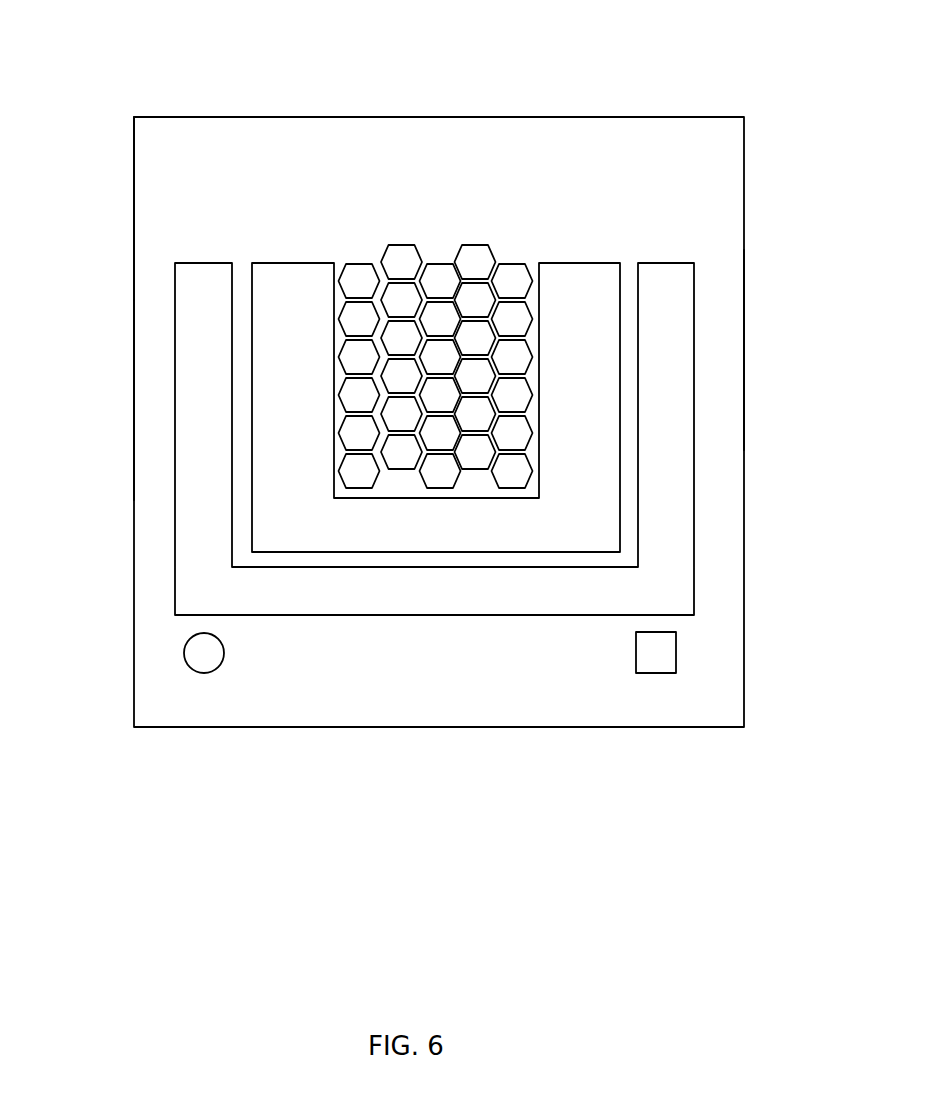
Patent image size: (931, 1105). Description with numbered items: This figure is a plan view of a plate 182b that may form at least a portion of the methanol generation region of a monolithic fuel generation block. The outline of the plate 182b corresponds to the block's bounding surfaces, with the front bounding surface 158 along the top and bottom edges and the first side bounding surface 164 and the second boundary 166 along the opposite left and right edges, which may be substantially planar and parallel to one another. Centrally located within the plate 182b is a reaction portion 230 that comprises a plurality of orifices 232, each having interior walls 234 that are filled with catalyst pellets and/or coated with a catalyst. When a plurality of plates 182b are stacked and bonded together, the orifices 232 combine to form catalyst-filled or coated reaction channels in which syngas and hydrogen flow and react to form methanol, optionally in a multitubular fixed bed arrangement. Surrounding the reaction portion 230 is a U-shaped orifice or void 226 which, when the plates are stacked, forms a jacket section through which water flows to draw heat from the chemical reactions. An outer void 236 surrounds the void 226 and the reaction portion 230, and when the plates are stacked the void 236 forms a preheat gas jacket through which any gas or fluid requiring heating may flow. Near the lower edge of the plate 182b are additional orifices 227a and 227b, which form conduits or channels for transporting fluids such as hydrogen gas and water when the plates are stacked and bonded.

The front bounding surface 158 is at (384, 117).
The plate 182b is at (134, 208).
The first side bounding surface 164 is at (134, 389).
The second boundary 166 is at (744, 352).
The void 236 is at (434, 439).
The orifice or void 226 is at (436, 407).
The reaction portion 230 is at (451, 248).
The orifices 232 is at (358, 277).
The interior walls 234 is at (463, 290).
The additional orifice 227a is at (640, 649).
The additional orifice 227b is at (208, 662).